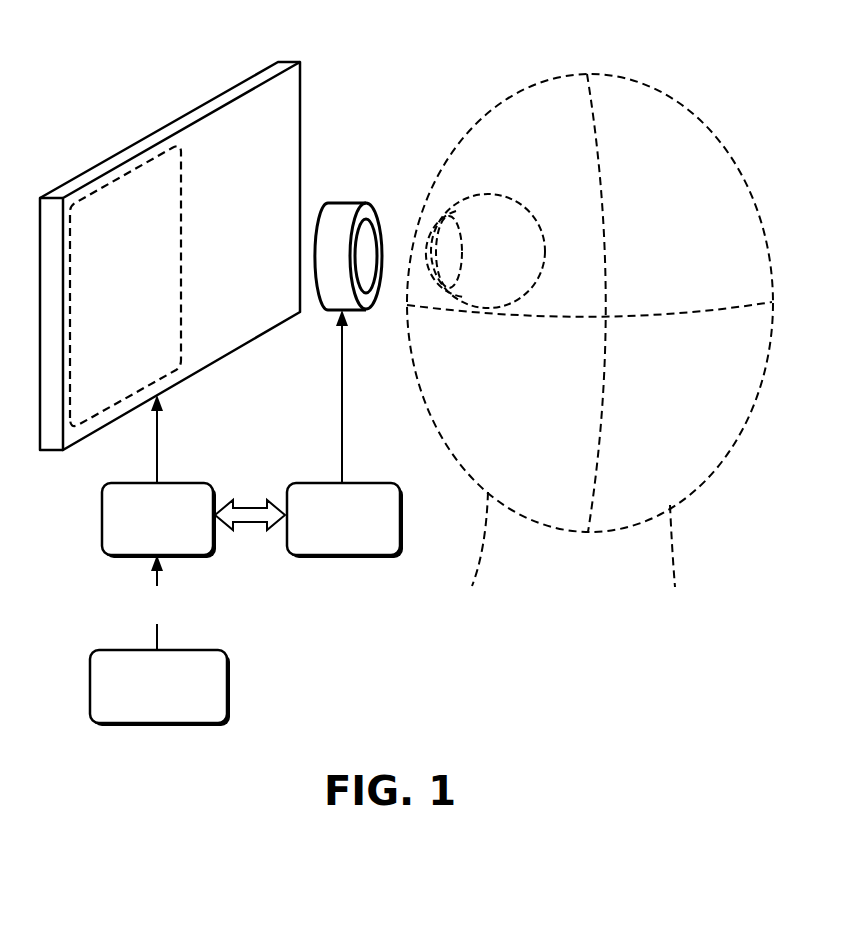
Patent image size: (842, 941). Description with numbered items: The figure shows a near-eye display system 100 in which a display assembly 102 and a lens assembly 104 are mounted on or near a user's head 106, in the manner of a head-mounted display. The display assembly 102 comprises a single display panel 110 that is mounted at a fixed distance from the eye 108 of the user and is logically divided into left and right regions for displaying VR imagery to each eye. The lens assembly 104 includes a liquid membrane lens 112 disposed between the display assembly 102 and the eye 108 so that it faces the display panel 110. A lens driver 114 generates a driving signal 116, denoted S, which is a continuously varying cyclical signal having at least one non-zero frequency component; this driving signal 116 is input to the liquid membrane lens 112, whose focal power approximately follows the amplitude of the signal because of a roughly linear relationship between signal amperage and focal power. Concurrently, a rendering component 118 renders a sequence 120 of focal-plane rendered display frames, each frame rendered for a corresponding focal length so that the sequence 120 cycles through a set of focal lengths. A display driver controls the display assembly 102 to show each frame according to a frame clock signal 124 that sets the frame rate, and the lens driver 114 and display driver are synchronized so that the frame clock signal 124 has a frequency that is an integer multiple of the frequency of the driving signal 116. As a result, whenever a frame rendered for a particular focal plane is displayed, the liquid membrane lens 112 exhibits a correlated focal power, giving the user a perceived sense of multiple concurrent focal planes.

The near-eye display system 100 is at (383, 46).
The display assembly 102 is at (267, 41).
The lens assembly 104 is at (352, 175).
The user's head 106 is at (649, 74).
The eye 108 is at (530, 213).
The display panel 110 is at (138, 140).
The liquid membrane lens 112 is at (370, 208).
The lens driver 114 is at (331, 535).
The driving signal 116 is at (342, 423).
The rendering component 118 is at (146, 711).
The sequence of display frames 120 is at (146, 544).
The frame clock signal 124 is at (157, 432).